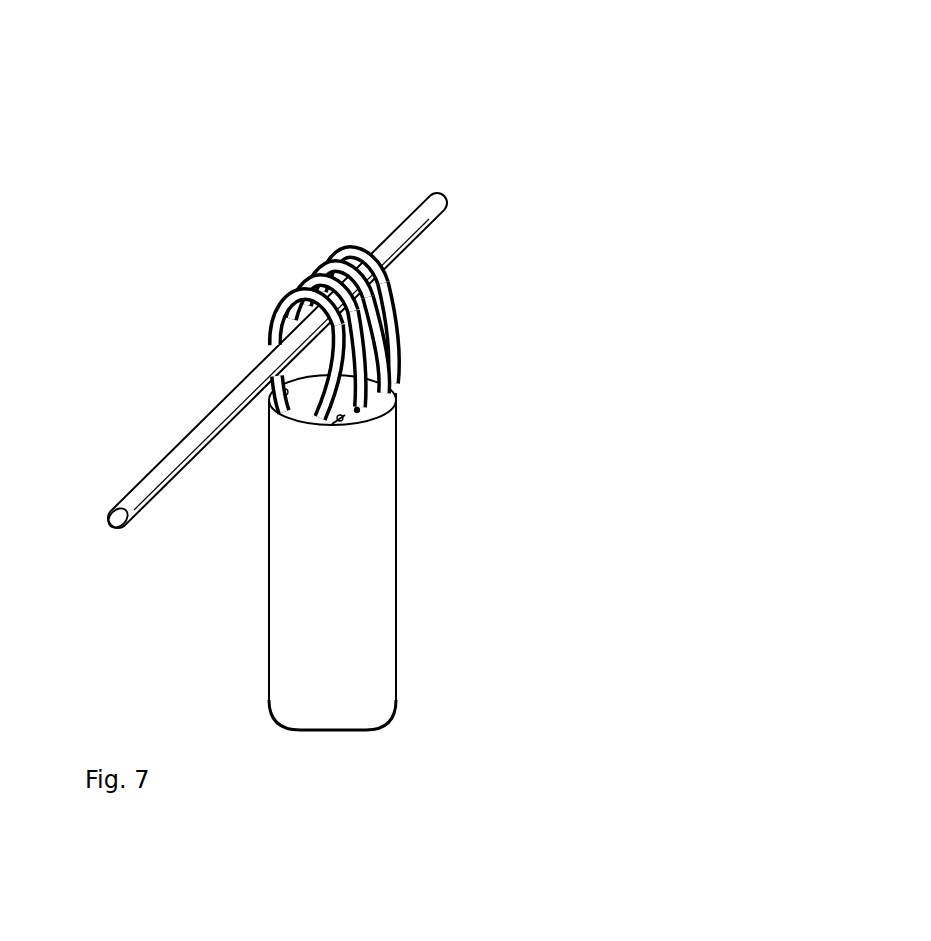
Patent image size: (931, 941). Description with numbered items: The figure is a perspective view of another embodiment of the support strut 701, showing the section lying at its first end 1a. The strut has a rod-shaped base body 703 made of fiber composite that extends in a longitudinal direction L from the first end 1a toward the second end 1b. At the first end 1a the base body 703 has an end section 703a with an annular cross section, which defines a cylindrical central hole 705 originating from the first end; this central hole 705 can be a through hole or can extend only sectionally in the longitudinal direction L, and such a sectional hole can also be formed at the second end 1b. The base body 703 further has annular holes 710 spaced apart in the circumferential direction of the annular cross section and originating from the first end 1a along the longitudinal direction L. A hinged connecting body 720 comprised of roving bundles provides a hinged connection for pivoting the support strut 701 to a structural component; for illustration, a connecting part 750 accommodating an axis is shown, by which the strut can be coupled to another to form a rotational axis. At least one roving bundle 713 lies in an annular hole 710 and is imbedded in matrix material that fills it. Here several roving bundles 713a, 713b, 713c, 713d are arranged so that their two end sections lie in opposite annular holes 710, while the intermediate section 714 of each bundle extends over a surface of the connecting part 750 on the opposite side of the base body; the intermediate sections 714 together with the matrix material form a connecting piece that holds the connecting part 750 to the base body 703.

The support strut 701 is at (218, 332).
The base body 703 is at (387, 613).
The end section 703a is at (395, 397).
The central hole 705 is at (356, 412).
The annular holes 710 is at (345, 415).
The roving bundle 713 is at (220, 225).
The roving bundle 713a is at (270, 307).
The roving bundle 713b is at (295, 288).
The roving bundle 713c is at (305, 267).
The roving bundle 713d is at (325, 258).
The intermediate section 714 is at (433, 370).
The hinged connecting body 720 is at (412, 165).
The connecting part 750 is at (283, 327).
The first end 1a is at (396, 365).
The second end 1b is at (343, 745).
The longitudinal direction L is at (418, 610).